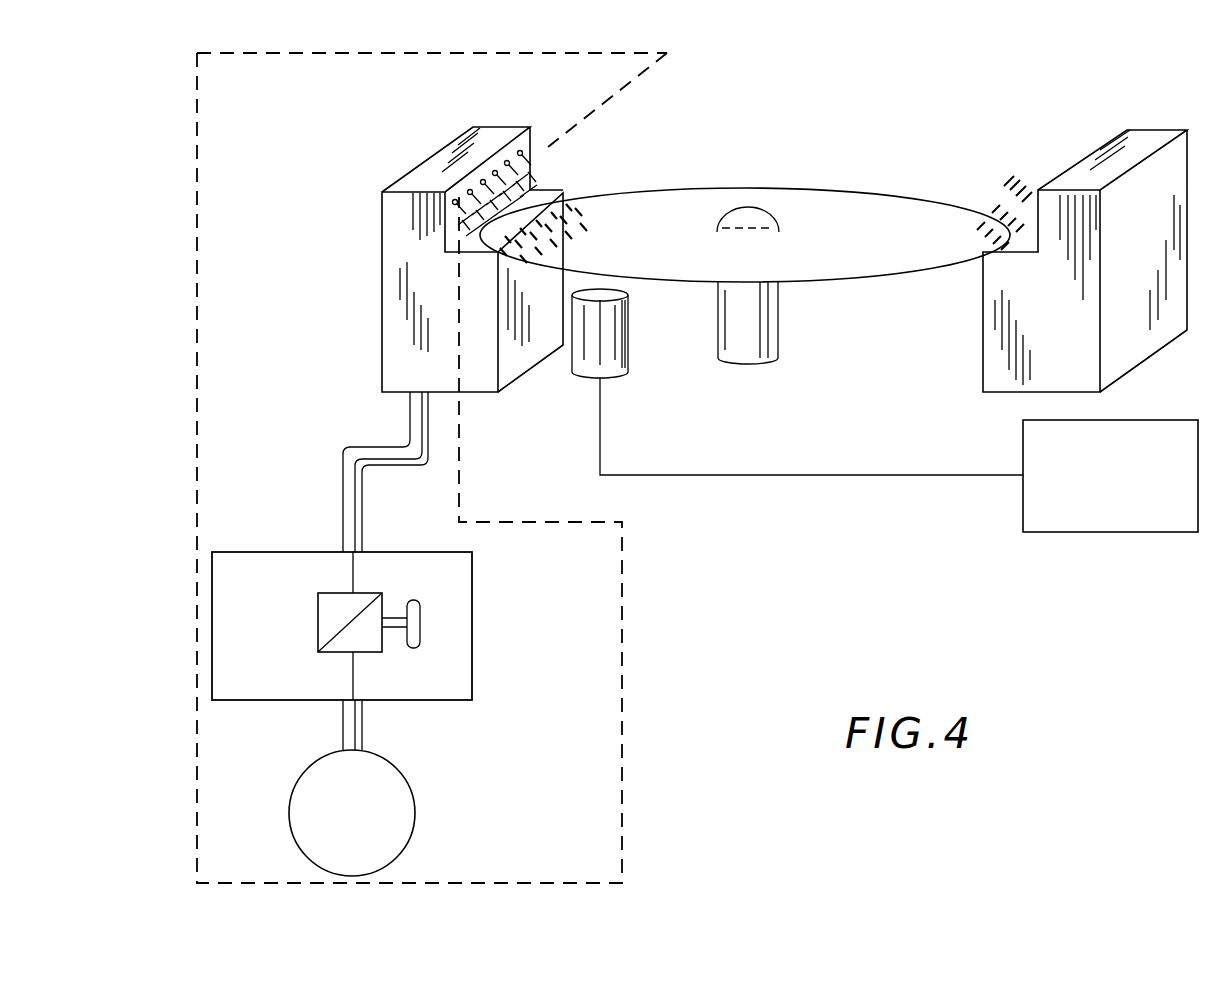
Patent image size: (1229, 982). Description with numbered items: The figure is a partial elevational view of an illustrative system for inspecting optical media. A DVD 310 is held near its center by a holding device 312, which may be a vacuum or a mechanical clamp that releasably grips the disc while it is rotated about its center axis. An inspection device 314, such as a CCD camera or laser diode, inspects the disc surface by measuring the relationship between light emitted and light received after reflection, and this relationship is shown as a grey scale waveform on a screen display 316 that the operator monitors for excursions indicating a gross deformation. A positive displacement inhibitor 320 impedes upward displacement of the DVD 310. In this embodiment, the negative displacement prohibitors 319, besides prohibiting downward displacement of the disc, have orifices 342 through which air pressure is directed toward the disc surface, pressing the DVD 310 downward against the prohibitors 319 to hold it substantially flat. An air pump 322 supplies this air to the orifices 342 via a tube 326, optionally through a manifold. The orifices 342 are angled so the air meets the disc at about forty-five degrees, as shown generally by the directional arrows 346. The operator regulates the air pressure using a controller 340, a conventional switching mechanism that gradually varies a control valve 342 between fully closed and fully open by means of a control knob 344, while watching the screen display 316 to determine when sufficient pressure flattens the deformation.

The DVD 310 is at (952, 200).
The holding device 312 is at (748, 362).
The inspection device 314 is at (630, 365).
The screen display 316 is at (1130, 420).
The negative displacement prohibitor 319 is at (380, 358).
The positive displacement inhibitor 320 is at (622, 797).
The air pump 322 is at (413, 805).
The tube 326 is at (340, 496).
The controller 340 is at (473, 650).
The orifices 342 is at (318, 624).
The control knob 344 is at (415, 601).
The directional arrows 346 is at (457, 214).